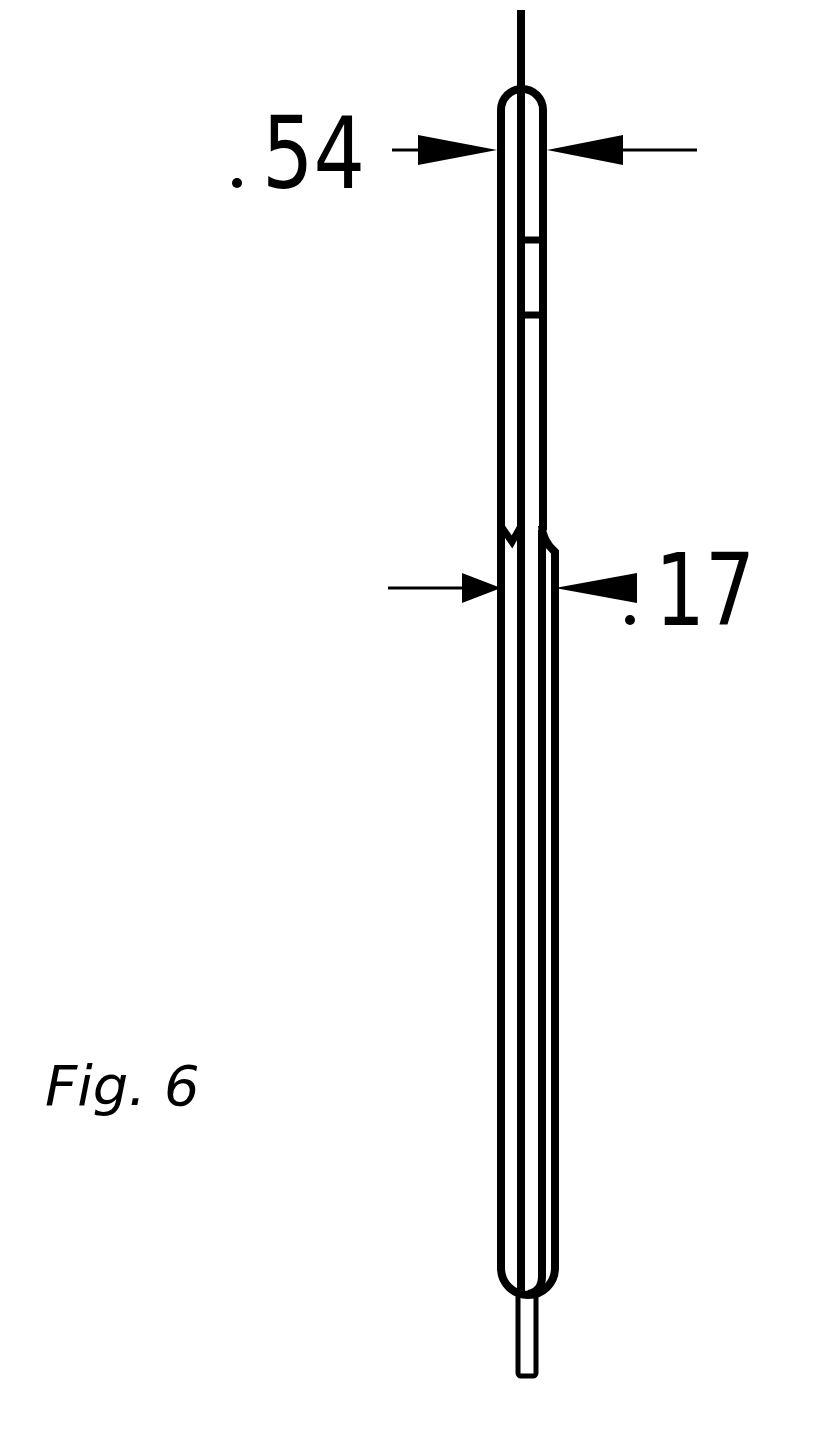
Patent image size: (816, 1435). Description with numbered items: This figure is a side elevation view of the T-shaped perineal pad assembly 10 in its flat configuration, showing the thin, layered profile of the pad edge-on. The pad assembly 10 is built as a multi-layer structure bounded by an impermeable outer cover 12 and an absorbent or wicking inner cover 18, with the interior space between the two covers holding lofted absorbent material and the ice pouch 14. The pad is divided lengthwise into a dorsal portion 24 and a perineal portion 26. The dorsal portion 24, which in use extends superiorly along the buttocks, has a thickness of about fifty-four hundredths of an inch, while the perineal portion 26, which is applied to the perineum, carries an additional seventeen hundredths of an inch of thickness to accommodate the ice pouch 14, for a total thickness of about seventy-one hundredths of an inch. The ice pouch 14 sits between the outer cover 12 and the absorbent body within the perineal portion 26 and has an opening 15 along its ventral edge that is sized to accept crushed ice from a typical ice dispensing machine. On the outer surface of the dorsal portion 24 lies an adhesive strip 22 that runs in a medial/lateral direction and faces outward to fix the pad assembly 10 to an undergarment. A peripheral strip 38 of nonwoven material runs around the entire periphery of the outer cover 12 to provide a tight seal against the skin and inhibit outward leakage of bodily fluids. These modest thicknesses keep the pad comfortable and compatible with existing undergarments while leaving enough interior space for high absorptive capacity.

The pad assembly 10 is at (262, 458).
The outer cover 12 is at (530, 1155).
The ice pouch 14 is at (565, 868).
The opening 15 is at (545, 1302).
The inner cover 18 is at (507, 1207).
The adhesive strip 22 is at (535, 283).
The dorsal portion 24 is at (585, 327).
The perineal portion 26 is at (468, 903).
The peripheral strip 38 is at (527, 54).